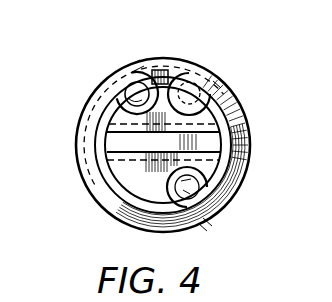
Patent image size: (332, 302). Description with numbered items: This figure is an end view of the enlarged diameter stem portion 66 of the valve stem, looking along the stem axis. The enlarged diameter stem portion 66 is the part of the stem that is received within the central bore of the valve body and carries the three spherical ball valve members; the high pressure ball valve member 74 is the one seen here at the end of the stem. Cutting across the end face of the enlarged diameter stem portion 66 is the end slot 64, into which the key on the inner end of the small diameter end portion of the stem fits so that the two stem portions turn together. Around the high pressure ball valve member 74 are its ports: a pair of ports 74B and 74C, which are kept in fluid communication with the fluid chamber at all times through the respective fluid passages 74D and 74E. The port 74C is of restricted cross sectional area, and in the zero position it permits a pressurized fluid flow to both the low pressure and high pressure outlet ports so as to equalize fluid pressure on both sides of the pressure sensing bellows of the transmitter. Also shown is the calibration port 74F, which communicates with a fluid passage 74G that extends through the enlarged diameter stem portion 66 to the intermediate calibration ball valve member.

The high pressure ball valve member 74 is at (84, 185).
The port 74B is at (133, 57).
The port 74C is at (208, 222).
The fluid passage 74D is at (120, 89).
The fluid passage 74E is at (225, 196).
The calibration port 74F is at (224, 76).
The fluid passage 74G is at (186, 60).
The end slot 64 is at (222, 145).
The enlarged diameter stem portion 66 is at (143, 175).